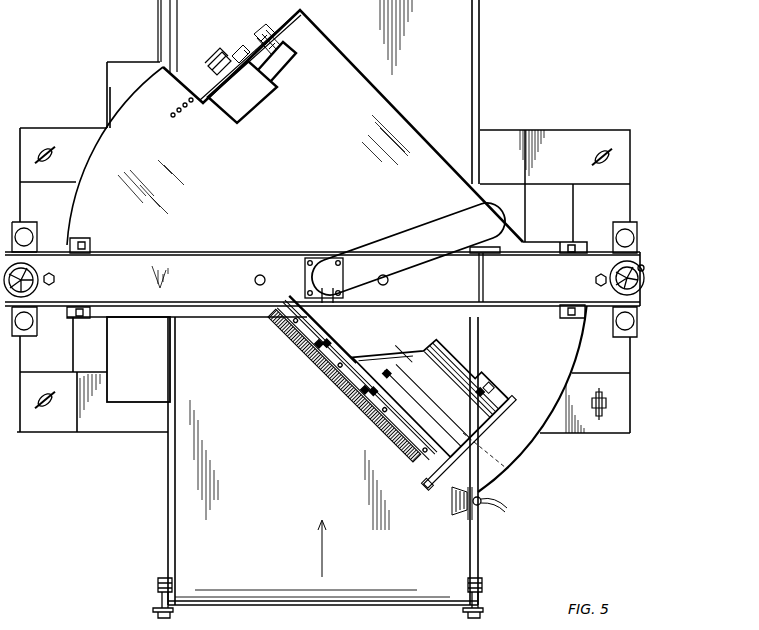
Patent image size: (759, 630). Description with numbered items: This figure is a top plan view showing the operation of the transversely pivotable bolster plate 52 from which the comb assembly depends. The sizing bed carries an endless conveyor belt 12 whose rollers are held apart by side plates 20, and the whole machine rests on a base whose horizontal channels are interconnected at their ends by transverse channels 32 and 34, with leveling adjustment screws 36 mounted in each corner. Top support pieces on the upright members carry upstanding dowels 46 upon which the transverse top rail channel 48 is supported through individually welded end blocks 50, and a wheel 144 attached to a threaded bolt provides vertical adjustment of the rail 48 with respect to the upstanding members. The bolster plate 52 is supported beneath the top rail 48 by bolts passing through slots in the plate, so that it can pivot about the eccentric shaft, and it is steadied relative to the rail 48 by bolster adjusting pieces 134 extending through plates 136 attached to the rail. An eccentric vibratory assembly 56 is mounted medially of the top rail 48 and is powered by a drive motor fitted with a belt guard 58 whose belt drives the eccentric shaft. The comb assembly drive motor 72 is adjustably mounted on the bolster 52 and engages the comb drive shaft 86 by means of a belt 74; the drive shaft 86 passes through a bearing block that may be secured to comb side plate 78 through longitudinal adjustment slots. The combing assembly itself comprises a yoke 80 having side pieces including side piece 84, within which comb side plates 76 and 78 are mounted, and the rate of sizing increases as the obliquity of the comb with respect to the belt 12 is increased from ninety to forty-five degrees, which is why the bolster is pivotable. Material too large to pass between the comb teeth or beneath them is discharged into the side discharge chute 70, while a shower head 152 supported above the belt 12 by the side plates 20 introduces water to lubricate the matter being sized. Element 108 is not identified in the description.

The endless conveyor belt 12 is at (432, 82).
The side plates 20 is at (482, 42).
The transverse channel 32 is at (606, 432).
The transverse channel 34 is at (553, 140).
The adjustment screws 36 is at (607, 412).
The upstanding dowels 46 is at (638, 332).
The transverse top rail channel 48 is at (208, 291).
The end blocks 50 is at (638, 228).
The transversely pivotable bolster plate 52 is at (347, 166).
The eccentric vibratory assembly 56 is at (309, 277).
The belt guard 58 is at (384, 258).
The side discharge chute 70 is at (147, 361).
The comb assembly drive motor 72 is at (244, 103).
The belt 74 is at (240, 54).
The comb side plate 76 is at (532, 399).
The comb side plate 78 is at (196, 96).
The yoke 80 is at (394, 351).
The side piece 84 is at (507, 468).
The comb drive shaft 86 is at (216, 61).
The feed guide 108 is at (353, 415).
The bolster adjusting pieces 134 is at (82, 307).
The plates 136 is at (92, 314).
The wheel 144 is at (647, 287).
The shower head 152 is at (456, 502).